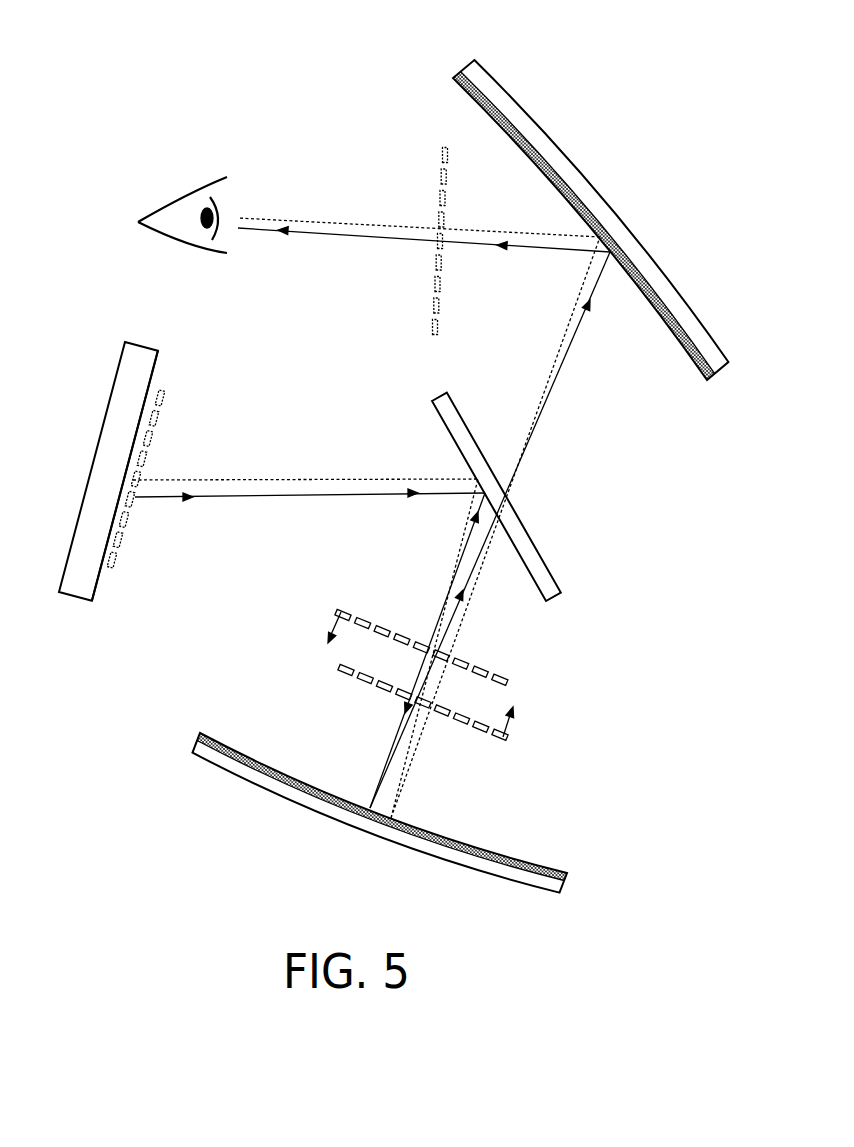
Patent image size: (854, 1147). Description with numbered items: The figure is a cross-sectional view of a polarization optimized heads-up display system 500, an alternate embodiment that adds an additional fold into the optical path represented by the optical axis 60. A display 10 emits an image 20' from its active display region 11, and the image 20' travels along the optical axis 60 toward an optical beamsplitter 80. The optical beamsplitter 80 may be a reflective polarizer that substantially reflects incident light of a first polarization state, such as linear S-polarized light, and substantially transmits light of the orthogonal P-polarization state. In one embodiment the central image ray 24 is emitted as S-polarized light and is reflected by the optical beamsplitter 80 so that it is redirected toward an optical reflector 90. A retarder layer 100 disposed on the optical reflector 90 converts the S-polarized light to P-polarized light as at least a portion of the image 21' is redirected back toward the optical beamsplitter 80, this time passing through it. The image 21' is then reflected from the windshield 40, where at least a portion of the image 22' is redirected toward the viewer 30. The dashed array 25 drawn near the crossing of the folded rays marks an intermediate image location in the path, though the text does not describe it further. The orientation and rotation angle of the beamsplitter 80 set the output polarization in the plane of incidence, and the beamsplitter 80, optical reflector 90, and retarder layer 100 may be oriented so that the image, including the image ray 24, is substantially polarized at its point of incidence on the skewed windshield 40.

The polarization optimized heads-up display system 500 is at (127, 69).
The display 10 is at (133, 363).
The active display region 11 is at (95, 577).
The image 20' is at (136, 523).
The optical axis 60 is at (190, 480).
The image 22' is at (409, 241).
The central image ray 24 is at (315, 233).
The viewer 30 is at (182, 203).
The windshield 40 is at (486, 52).
The optical beamsplitter 80 is at (543, 578).
The intermediate image plane 25 is at (340, 610).
The image 21' is at (468, 712).
The optical reflector 90 is at (550, 892).
The retarder layer 100 is at (568, 877).